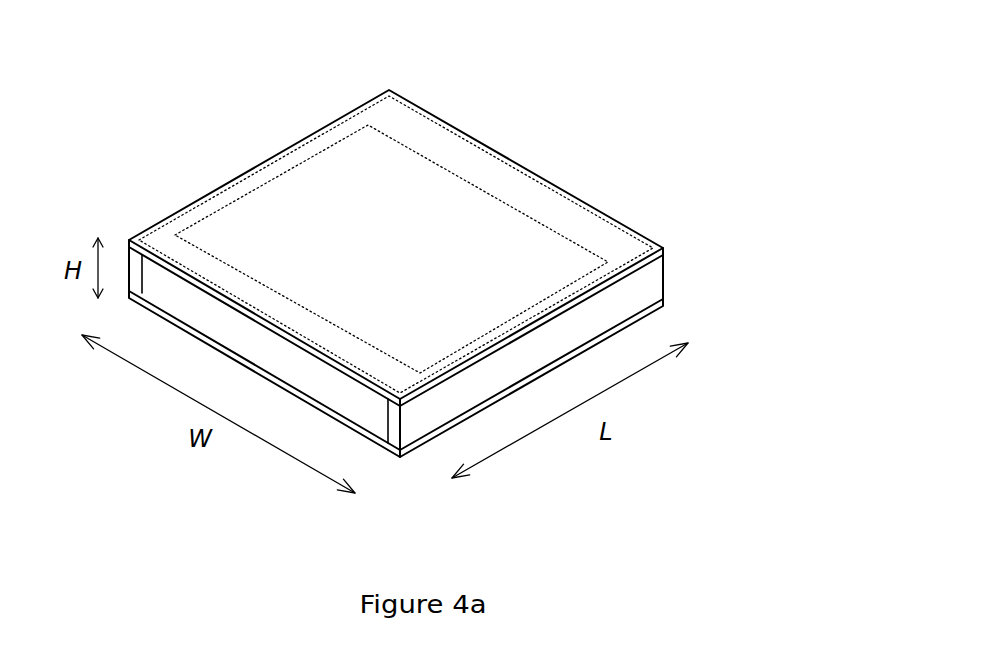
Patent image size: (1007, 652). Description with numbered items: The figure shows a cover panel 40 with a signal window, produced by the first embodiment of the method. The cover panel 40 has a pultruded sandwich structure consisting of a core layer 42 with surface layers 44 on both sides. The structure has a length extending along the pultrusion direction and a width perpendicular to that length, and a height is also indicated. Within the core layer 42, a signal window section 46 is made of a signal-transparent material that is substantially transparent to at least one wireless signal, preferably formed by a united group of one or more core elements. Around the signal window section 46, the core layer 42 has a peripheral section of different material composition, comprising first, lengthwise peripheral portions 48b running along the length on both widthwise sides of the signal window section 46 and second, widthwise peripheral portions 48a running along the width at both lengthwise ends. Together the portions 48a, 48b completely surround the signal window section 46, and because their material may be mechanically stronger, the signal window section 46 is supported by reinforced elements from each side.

The cover panel 40 is at (600, 75).
The core layer 42 is at (655, 277).
The surface layers 44 is at (662, 249).
The signal window section 46 is at (317, 175).
The second, widthwise peripheral portions 48a is at (178, 252).
The first, lengthwise peripheral portions 48b is at (235, 188).